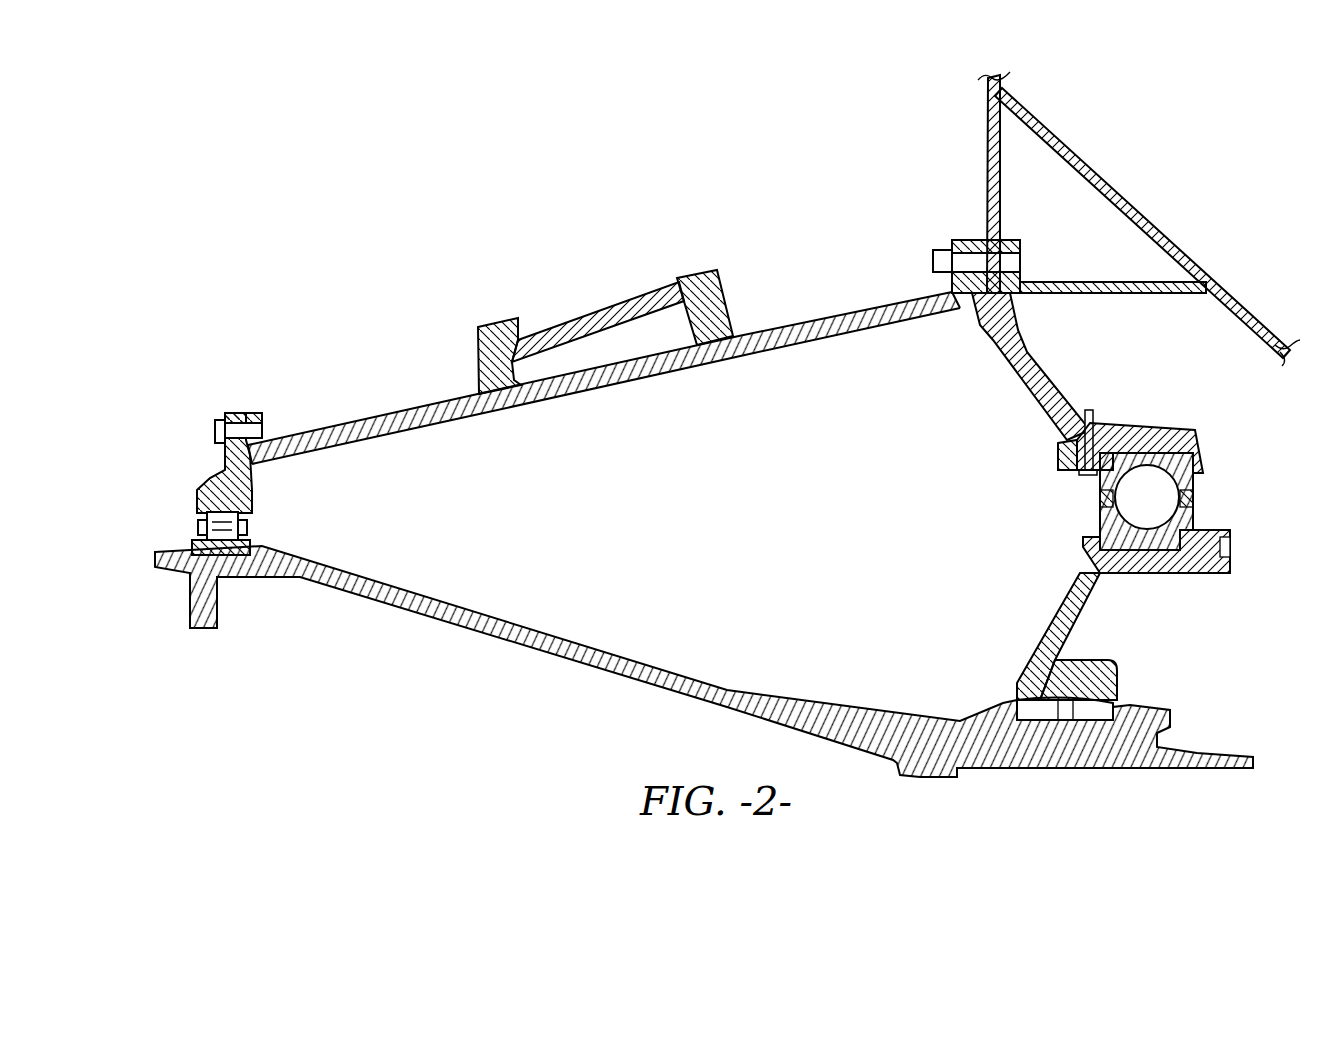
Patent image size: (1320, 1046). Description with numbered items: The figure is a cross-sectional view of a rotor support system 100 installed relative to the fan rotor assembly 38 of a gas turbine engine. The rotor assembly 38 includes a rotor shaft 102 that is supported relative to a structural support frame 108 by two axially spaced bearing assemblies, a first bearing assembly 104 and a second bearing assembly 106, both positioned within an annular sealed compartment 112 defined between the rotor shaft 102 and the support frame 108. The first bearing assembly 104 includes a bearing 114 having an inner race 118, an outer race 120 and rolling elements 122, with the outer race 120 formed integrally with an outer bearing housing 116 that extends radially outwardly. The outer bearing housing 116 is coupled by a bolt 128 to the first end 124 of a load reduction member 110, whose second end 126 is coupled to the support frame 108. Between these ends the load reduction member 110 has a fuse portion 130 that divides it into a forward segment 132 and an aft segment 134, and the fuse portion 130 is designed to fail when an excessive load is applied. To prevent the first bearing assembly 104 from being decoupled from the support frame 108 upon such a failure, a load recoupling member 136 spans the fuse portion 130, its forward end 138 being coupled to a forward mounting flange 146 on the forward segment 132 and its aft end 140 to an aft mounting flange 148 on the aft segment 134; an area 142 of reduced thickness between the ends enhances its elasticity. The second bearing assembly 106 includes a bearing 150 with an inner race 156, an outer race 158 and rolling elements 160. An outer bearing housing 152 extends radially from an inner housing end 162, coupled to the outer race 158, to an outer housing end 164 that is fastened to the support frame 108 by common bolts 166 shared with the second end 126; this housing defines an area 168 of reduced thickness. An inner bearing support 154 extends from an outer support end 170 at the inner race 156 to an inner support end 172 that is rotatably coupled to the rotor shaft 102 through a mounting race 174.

The fan rotor assembly 38 is at (422, 657).
The rotor support system 100 is at (316, 212).
The rotor shaft 102 is at (545, 640).
The first bearing assembly 104 is at (303, 510).
The second bearing assembly 106 is at (997, 495).
The structural support frame 108 is at (996, 157).
The load reduction member 110 is at (373, 377).
The sealed compartment 112 is at (703, 536).
The bearing 114 is at (257, 523).
The outer bearing housing 116 is at (210, 465).
The inner race 118 is at (190, 550).
The outer race 120 is at (202, 487).
The rolling elements 122 is at (212, 523).
The first end 124 is at (247, 420).
The second end 126 is at (967, 240).
The bolt 128 is at (213, 430).
The fuse portion 130 is at (600, 367).
The forward segment 132 is at (413, 421).
The aft segment 134 is at (848, 318).
The load recoupling member 136 is at (558, 303).
The forward end 138 is at (510, 323).
The aft end 140 is at (678, 276).
The area of reduced thickness 142 is at (598, 320).
The forward mounting flange 146 is at (490, 353).
The aft mounting flange 148 is at (727, 290).
The bearing 150 is at (1200, 495).
The outer bearing housing 152 is at (1063, 393).
The inner bearing support 154 is at (1038, 642).
The inner race 156 is at (1187, 518).
The outer race 158 is at (1183, 463).
The rolling elements 160 is at (1129, 509).
The inner housing end 162 is at (1140, 440).
The outer housing end 164 is at (983, 318).
The bolts 166 is at (1017, 260).
The area of reduced thickness 168 is at (1037, 357).
The outer support end 170 is at (1160, 562).
The inner support end 172 is at (1087, 670).
The mounting race 174 is at (1097, 708).